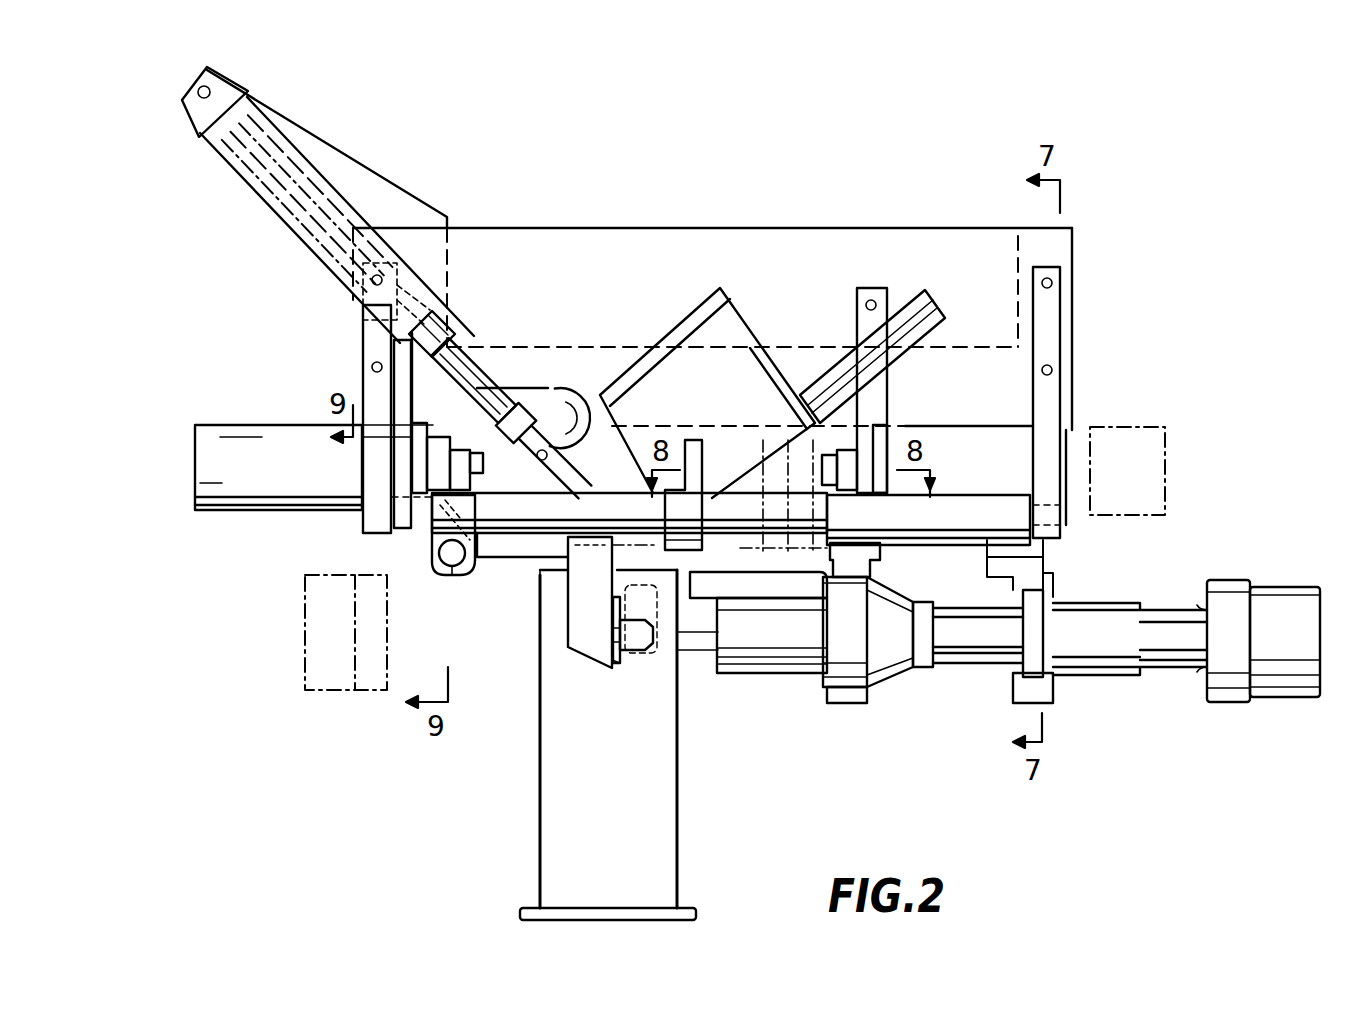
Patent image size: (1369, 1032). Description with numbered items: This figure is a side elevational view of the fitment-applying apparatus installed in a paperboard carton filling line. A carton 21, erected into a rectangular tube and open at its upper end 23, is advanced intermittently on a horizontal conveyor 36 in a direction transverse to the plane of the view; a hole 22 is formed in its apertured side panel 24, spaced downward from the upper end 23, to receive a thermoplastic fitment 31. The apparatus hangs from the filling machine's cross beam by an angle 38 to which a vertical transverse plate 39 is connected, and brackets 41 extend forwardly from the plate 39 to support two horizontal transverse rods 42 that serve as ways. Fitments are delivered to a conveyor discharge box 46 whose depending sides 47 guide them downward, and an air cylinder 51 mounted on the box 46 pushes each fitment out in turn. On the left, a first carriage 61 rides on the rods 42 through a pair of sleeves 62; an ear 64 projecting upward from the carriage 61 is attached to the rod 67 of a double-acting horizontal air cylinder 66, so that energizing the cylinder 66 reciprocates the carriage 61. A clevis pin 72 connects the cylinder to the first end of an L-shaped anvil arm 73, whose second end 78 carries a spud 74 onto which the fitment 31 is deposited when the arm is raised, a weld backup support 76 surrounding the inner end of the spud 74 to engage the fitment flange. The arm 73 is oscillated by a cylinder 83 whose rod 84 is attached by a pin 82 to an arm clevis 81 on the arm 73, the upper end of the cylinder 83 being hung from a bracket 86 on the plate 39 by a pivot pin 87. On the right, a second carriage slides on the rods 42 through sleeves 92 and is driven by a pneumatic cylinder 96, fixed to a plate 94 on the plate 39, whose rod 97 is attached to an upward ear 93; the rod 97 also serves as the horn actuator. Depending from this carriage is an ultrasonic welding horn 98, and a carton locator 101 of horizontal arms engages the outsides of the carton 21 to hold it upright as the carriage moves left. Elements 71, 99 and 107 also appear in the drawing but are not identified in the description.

The carton 21 is at (586, 813).
The hole 22 is at (680, 655).
The upper end 23 is at (562, 568).
The apertured side panel 24 is at (683, 636).
The fitment 31 is at (633, 615).
The horizontal conveyor 36 is at (693, 905).
The angle 38 is at (800, 237).
The vertical transverse plate 39 is at (591, 226).
The brackets 41 is at (362, 345).
The horizontal transverse rods 42 is at (413, 527).
The conveyor discharge box 46 is at (697, 300).
The sides 47 is at (691, 400).
The air cylinder 51 is at (835, 362).
The first carriage 61 is at (457, 583).
The sleeves 62 is at (508, 537).
The ear 64 is at (563, 424).
The double-acting horizontal air cylinder 66 is at (1140, 398).
The rod 67 is at (478, 462).
The block 71 is at (433, 537).
The clevis pin 72 is at (447, 577).
The L-shaped anvil arm 73 is at (585, 632).
The spud 74 is at (653, 650).
The weld backup support 76 is at (620, 690).
The second end 78 is at (622, 672).
The arm clevis 81 is at (505, 365).
The pin 82 is at (592, 404).
The cylinder 83 is at (278, 130).
The rod 84 is at (478, 373).
The bracket 86 is at (347, 170).
The pivot pin 87 is at (218, 78).
The sleeves 92 is at (957, 505).
The ear 93 is at (875, 503).
The plate 94 is at (868, 292).
The pneumatic cylinder 96 is at (952, 424).
The rod 97 is at (893, 440).
The ultrasonic welding horn 98 is at (762, 643).
The pipe 99 is at (1090, 623).
The carton locator 101 is at (742, 582).
The clamp 107 is at (828, 458).